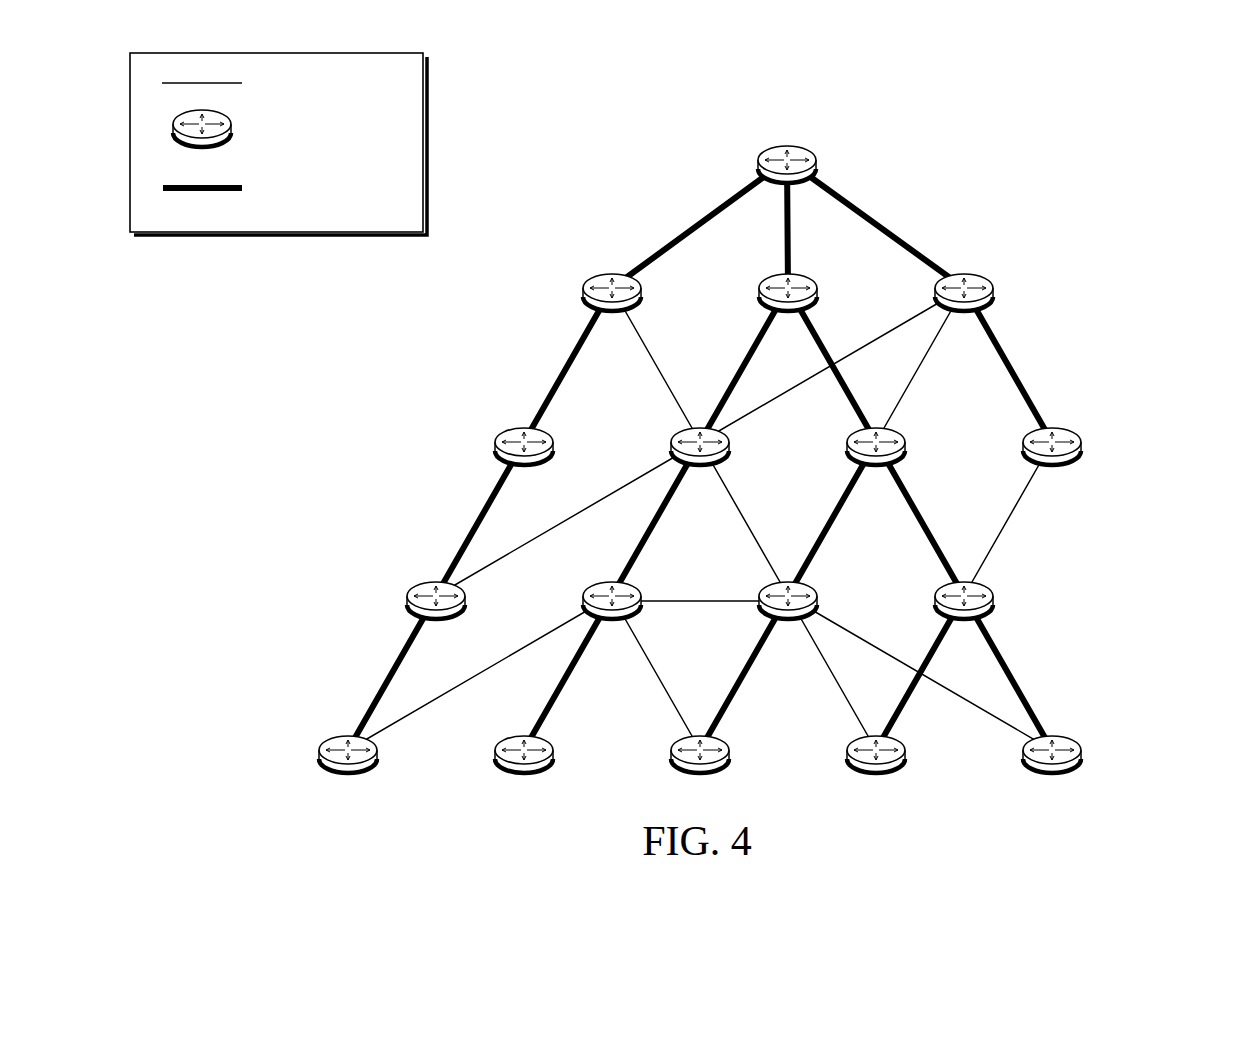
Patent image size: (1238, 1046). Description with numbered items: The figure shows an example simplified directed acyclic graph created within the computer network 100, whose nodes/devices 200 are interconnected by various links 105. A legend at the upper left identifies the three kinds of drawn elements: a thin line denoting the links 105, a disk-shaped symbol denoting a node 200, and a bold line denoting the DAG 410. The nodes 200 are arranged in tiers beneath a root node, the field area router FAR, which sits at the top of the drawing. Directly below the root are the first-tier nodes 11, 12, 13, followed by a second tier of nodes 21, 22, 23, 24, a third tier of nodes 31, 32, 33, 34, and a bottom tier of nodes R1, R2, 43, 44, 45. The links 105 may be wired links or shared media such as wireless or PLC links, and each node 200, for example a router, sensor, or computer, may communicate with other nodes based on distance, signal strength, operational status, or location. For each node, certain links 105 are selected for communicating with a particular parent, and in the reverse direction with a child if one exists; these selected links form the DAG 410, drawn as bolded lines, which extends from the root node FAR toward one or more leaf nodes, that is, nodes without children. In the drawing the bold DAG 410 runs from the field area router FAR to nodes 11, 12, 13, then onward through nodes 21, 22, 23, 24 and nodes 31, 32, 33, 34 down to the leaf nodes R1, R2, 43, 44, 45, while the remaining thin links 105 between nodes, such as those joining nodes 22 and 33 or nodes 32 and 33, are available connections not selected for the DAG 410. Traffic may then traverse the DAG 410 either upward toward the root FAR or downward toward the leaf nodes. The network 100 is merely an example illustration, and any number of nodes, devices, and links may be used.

The computer network 100 is at (1176, 108).
The links 105 is at (261, 82).
The nodes/devices 200 is at (265, 128).
The DAG 410 is at (254, 188).
The field area router FAR is at (787, 144).
The node 11 is at (612, 311).
The node 12 is at (788, 311).
The node 13 is at (964, 311).
The node 21 is at (524, 465).
The node 22 is at (700, 465).
The node 23 is at (876, 465).
The node 24 is at (1052, 465).
The node 31 is at (436, 618).
The node 32 is at (612, 618).
The node 33 is at (788, 618).
The node 34 is at (964, 618).
The node R1 is at (348, 772).
The node R2 is at (524, 772).
The node 43 is at (700, 772).
The node 44 is at (876, 772).
The node 45 is at (1052, 772).